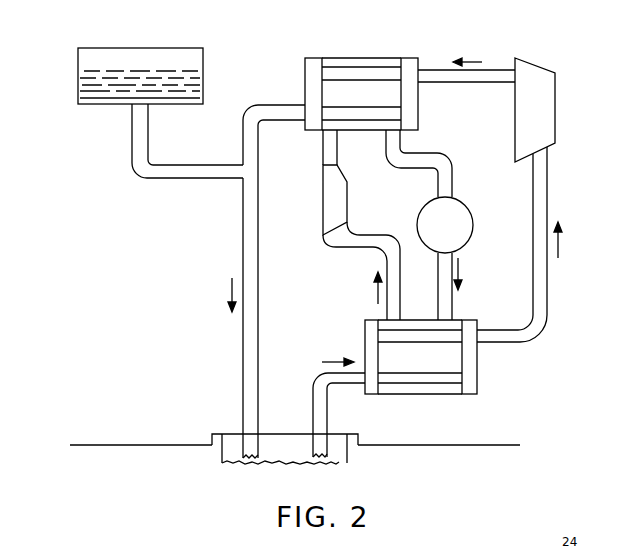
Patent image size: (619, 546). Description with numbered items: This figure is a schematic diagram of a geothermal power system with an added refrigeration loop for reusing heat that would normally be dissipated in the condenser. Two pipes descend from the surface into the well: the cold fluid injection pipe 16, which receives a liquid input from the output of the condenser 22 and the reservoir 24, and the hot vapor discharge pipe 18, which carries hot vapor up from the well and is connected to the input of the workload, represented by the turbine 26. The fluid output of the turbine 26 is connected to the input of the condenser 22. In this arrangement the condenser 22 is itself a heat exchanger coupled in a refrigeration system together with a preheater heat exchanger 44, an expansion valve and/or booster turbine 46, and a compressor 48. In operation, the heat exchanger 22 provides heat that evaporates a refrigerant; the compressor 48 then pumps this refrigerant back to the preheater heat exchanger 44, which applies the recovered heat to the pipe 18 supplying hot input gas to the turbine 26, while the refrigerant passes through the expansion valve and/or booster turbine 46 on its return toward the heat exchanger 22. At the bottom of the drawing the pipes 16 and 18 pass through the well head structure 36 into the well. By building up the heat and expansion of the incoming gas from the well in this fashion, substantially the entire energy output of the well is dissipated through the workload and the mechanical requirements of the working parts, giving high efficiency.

The cold fluid injection pipe 16 is at (243, 380).
The hot vapor discharge pipe 18 is at (327, 432).
The condenser 22 is at (375, 58).
The reservoir 24 is at (150, 48).
The turbine 26 is at (552, 54).
The well casing 36 is at (215, 434).
The preheater heat exchanger 44 is at (365, 344).
The expansion valve and/or booster turbine 46 is at (322, 178).
The compressor 48 is at (472, 221).